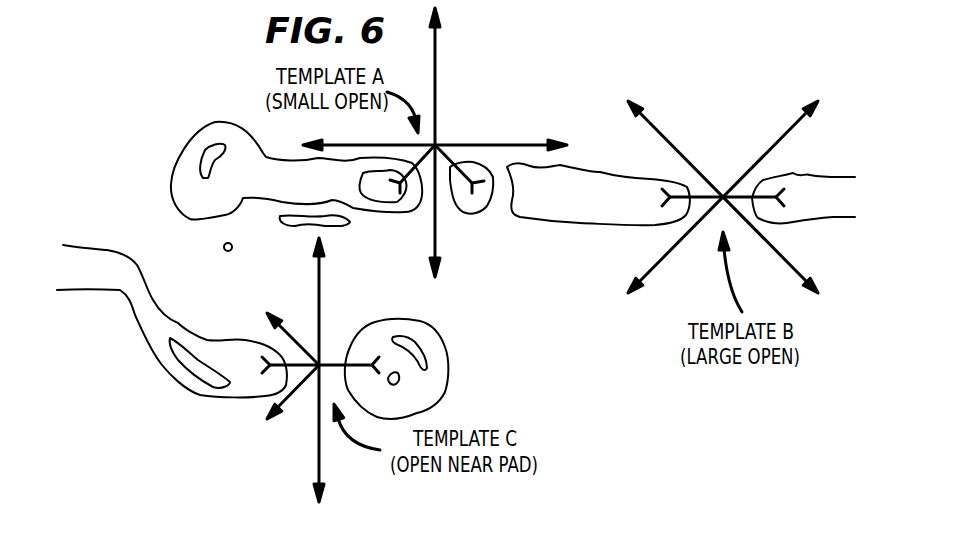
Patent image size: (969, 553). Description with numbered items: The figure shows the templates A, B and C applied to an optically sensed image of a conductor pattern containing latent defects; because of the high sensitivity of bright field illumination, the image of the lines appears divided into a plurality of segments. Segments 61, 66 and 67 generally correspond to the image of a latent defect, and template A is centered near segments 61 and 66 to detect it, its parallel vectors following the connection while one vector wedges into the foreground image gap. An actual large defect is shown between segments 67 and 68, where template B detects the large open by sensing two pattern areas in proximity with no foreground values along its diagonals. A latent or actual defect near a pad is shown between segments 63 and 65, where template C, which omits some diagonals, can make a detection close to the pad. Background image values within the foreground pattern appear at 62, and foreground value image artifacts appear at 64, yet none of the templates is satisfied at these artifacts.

The segment 61 is at (377, 208).
The background image values within the foreground pattern 62 is at (170, 342).
The segment 63 is at (147, 327).
The foreground value image artifacts 64 is at (232, 248).
The segment 65 is at (435, 340).
The segment 66 is at (473, 208).
The segment 67 is at (565, 203).
The segment 68 is at (825, 212).